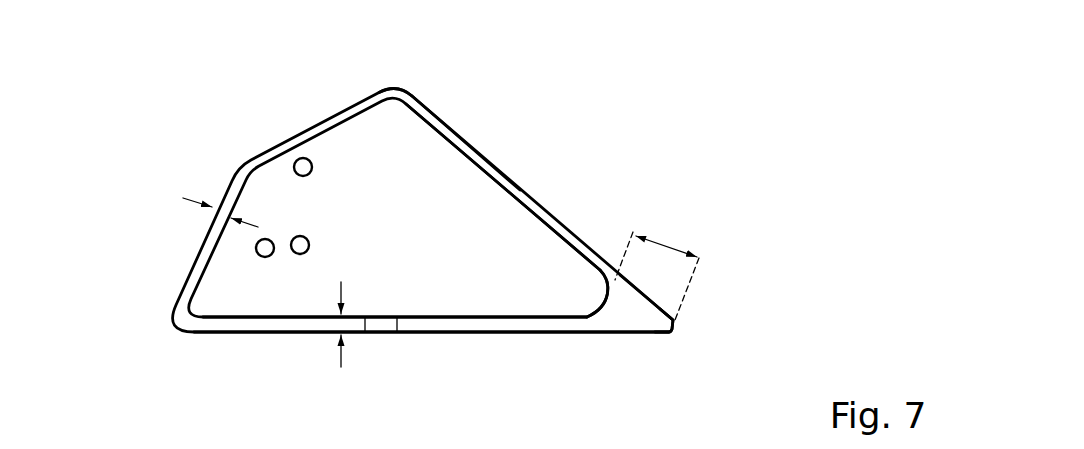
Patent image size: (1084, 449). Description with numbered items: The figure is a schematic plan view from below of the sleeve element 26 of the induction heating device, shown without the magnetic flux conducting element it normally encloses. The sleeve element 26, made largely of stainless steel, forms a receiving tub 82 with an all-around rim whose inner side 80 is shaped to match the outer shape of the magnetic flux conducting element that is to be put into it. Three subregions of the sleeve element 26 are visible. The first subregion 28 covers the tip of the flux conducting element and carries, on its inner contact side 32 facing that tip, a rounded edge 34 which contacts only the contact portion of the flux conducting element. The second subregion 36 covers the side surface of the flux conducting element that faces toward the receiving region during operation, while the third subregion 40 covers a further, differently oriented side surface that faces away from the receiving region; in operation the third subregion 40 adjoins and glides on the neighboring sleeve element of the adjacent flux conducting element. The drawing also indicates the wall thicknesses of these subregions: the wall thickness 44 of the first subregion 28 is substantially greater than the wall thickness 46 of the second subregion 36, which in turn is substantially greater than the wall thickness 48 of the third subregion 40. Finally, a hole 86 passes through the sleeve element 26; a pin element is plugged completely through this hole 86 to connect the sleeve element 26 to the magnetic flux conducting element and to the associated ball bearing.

The sleeve element 26 is at (477, 200).
The first subregion 28 is at (687, 328).
The inner contact side 32 is at (606, 302).
The rounded edge 34 is at (624, 300).
The second subregion 36 is at (455, 340).
The third subregion 40 is at (158, 191).
The wall thickness 44 is at (670, 246).
The wall thickness 46 is at (336, 321).
The wall thickness 48 is at (224, 205).
The inner side 80 is at (361, 143).
The receiving tub 82 is at (413, 138).
The hole 86 is at (260, 252).